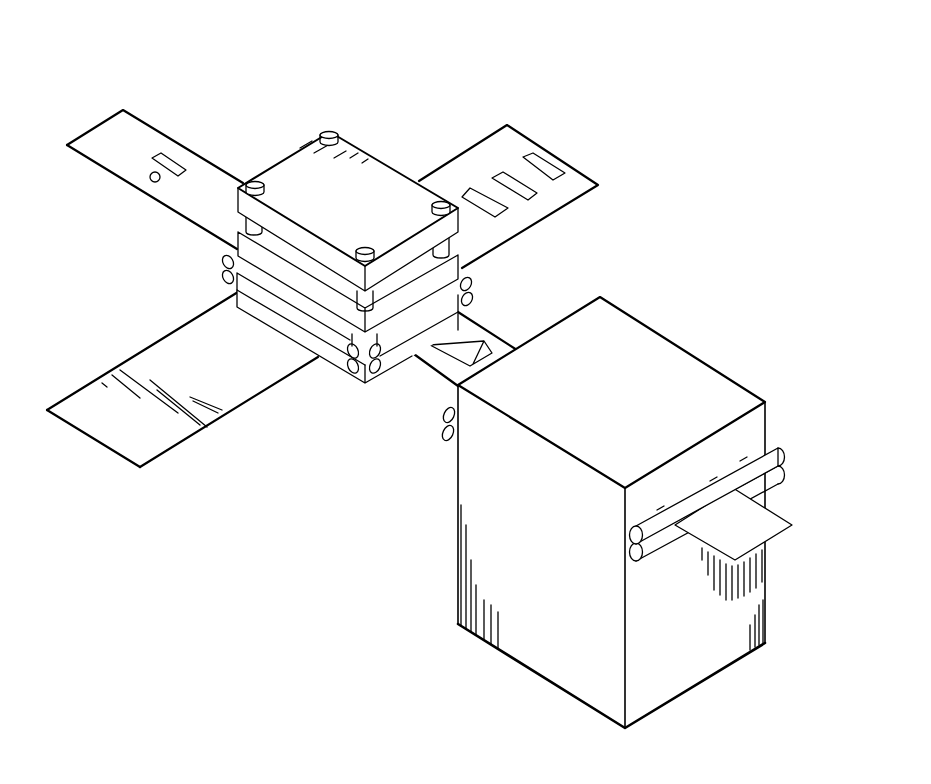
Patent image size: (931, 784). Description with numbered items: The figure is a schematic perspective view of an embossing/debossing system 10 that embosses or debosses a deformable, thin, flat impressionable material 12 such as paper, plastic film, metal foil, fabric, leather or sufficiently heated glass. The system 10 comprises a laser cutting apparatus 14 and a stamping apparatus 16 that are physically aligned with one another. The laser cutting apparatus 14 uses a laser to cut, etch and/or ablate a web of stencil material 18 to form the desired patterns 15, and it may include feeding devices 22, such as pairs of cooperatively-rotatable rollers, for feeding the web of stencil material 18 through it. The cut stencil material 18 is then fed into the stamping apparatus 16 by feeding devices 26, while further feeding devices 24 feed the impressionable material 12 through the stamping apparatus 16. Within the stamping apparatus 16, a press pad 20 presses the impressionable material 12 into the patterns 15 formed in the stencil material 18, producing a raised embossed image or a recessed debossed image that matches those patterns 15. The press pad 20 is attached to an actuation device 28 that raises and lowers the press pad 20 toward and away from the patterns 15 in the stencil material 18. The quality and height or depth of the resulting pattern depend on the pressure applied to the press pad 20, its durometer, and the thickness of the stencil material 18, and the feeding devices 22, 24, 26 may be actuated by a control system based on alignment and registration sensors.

The embossing/debossing system 10 is at (233, 70).
The impressionable material 12 is at (258, 377).
The laser cutting apparatus 14 is at (699, 318).
The patterns 15 is at (150, 180).
The stamping apparatus 16 is at (402, 138).
The stencil material 18 is at (772, 517).
The press pad 20 is at (236, 275).
The feeding devices 22 is at (443, 432).
The feeding devices 24 is at (386, 345).
The feeding devices 26 is at (268, 303).
The actuation device 28 is at (257, 232).